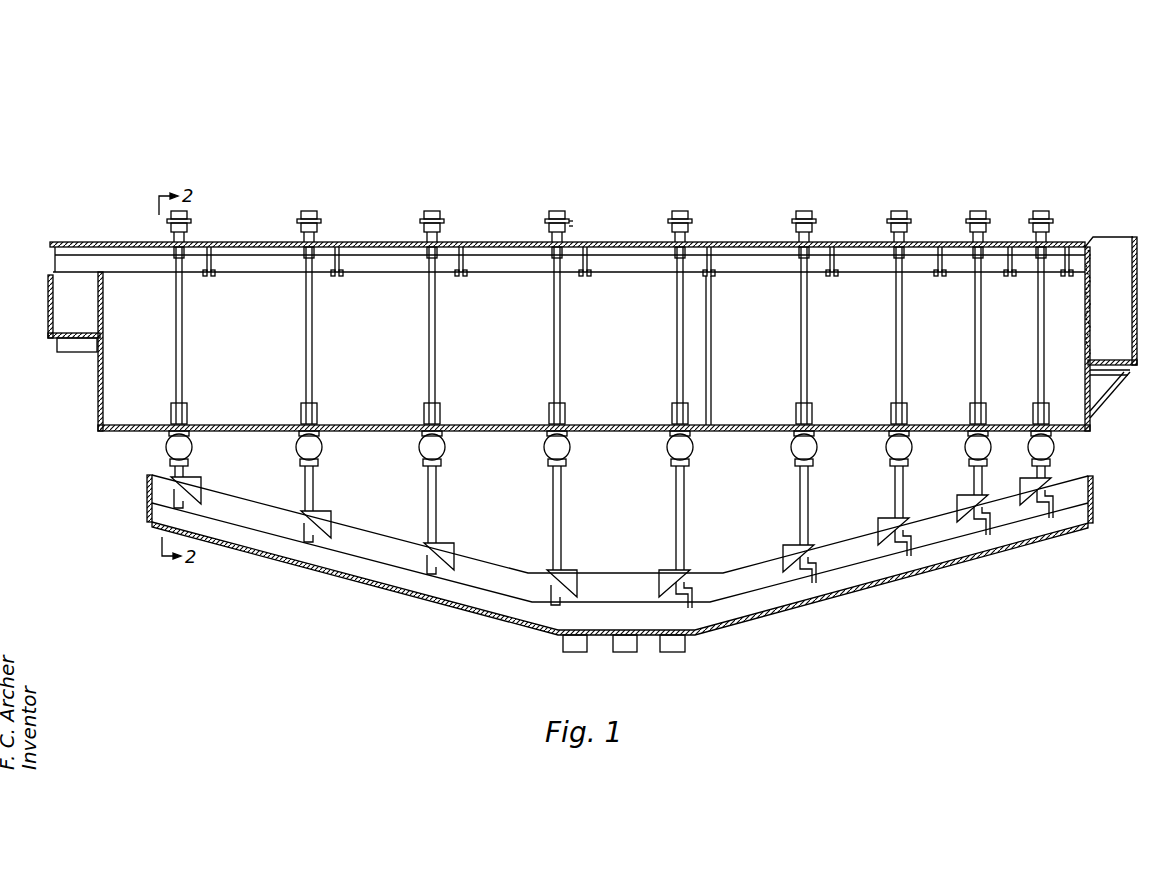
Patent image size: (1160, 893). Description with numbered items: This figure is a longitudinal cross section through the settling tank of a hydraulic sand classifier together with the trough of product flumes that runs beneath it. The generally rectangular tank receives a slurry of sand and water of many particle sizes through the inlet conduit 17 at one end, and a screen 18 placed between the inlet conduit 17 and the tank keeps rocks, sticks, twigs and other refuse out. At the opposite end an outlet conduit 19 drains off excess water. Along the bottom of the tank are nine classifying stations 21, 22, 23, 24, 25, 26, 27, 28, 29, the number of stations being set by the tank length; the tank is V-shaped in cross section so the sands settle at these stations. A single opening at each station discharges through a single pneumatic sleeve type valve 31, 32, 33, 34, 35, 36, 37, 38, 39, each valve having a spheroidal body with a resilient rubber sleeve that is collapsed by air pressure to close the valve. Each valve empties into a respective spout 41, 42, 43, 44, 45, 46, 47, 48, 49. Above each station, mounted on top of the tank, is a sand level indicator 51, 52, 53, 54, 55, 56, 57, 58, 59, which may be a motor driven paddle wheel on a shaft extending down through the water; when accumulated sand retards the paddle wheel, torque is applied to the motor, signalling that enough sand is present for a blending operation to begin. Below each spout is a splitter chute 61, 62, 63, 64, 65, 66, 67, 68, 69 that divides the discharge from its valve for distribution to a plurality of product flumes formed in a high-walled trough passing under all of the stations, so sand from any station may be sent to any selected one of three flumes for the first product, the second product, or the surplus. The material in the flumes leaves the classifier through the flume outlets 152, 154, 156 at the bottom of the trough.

The inlet conduit 17 is at (1136, 246).
The screen 18 is at (1090, 306).
The outlet conduit 19 is at (57, 346).
The classifying station 21 is at (1032, 420).
The classifying station 22 is at (969, 420).
The classifying station 23 is at (890, 420).
The classifying station 24 is at (794, 420).
The classifying station 25 is at (670, 420).
The classifying station 26 is at (570, 422).
The classifying station 27 is at (445, 422).
The classifying station 28 is at (322, 422).
The classifying station 29 is at (192, 422).
The valve 31 is at (1054, 447).
The valve 32 is at (965, 447).
The valve 33 is at (886, 447).
The valve 34 is at (791, 447).
The valve 35 is at (667, 447).
The valve 36 is at (570, 447).
The valve 37 is at (445, 447).
The valve 38 is at (322, 447).
The valve 39 is at (192, 447).
The spout 41 is at (1046, 474).
The spout 42 is at (973, 484).
The spout 43 is at (894, 491).
The spout 44 is at (799, 512).
The spout 45 is at (675, 512).
The spout 46 is at (562, 522).
The spout 47 is at (437, 505).
The spout 48 is at (314, 494).
The spout 49 is at (184, 479).
The sand level indicator 51 is at (1038, 329).
The sand level indicator 52 is at (975, 329).
The sand level indicator 53 is at (896, 329).
The sand level indicator 54 is at (801, 329).
The sand level indicator 55 is at (677, 329).
The sand level indicator 56 is at (562, 335).
The sand level indicator 57 is at (437, 335).
The sand level indicator 58 is at (314, 335).
The sand level indicator 59 is at (184, 335).
The splitter chute 61 is at (1090, 489).
The splitter chute 62 is at (956, 502).
The splitter chute 63 is at (877, 522).
The splitter chute 64 is at (782, 555).
The splitter chute 65 is at (669, 573).
The splitter chute 66 is at (568, 572).
The splitter chute 67 is at (453, 545).
The splitter chute 68 is at (333, 518).
The splitter chute 69 is at (203, 487).
The flume outlet 152 is at (576, 653).
The flume outlet 154 is at (629, 653).
The flume outlet 156 is at (689, 654).